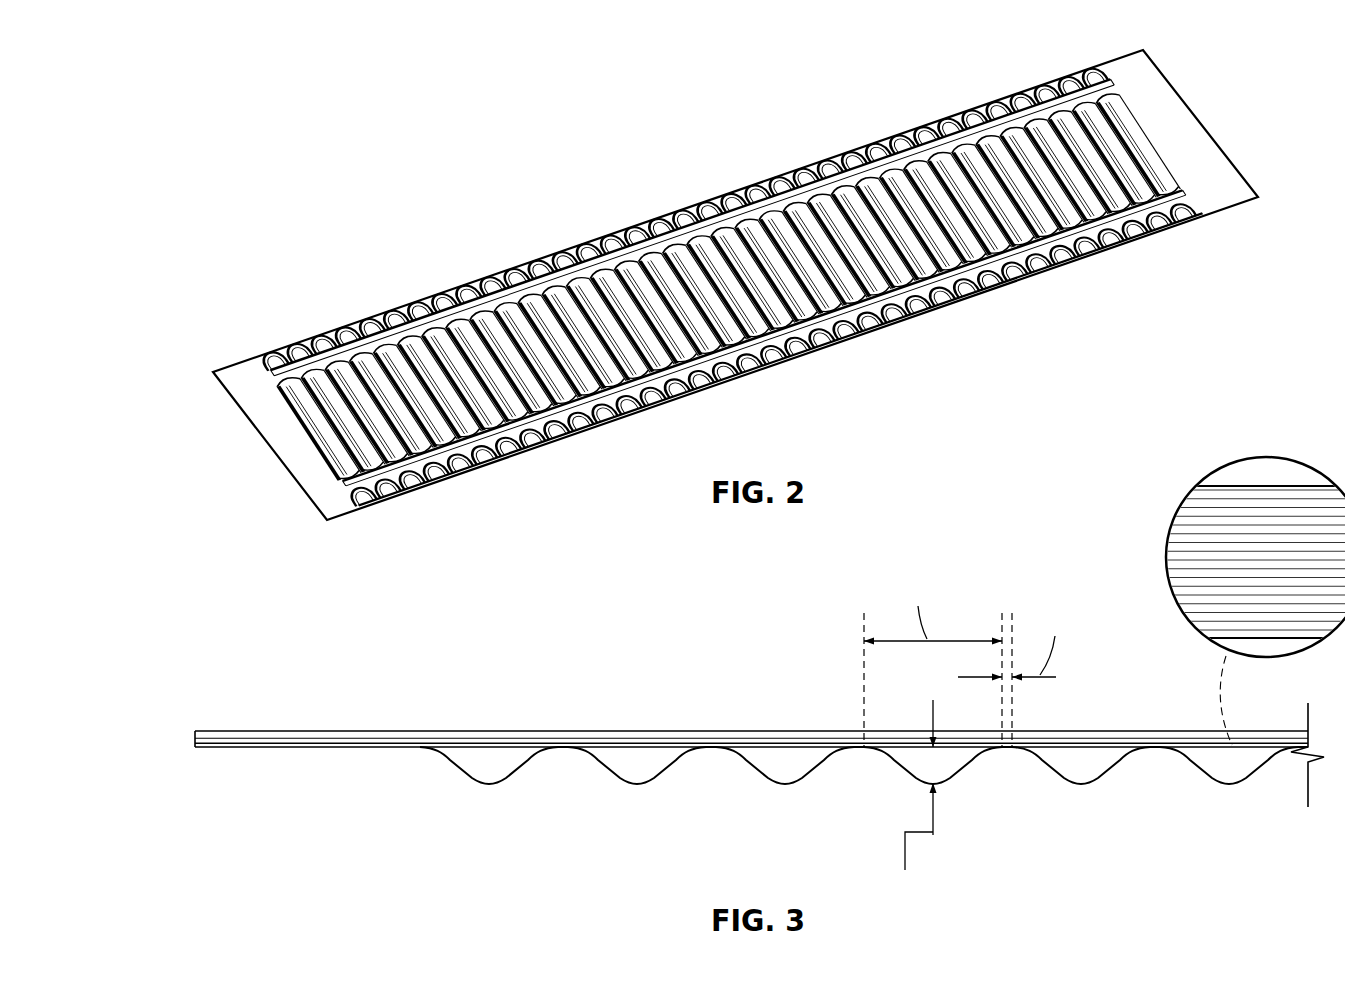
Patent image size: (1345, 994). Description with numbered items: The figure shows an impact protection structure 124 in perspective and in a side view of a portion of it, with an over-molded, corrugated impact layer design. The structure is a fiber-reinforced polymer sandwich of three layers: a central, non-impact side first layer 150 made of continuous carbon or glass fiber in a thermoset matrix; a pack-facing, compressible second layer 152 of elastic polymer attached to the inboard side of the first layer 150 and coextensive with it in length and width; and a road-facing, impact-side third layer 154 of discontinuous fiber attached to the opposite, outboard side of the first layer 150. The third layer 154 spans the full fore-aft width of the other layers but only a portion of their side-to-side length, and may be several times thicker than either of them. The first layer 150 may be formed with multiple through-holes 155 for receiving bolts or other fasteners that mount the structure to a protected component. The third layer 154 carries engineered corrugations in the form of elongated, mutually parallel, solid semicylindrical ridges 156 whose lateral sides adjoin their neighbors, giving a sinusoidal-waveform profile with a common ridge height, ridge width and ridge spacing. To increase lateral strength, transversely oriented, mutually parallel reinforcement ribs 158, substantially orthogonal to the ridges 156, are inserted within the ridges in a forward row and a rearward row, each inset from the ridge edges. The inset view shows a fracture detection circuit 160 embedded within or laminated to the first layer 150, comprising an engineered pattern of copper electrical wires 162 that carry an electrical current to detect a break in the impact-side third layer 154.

In FIG. 2, the impact protection structure 124 is at (222, 136).
In FIG. 3, the impact protection structure 124 is at (222, 666).
In FIG. 2, the first layer 150 is at (234, 372).
In FIG. 3, the first layer 150 is at (195, 743).
In FIG. 3, the second layer 152 is at (195, 733).
In FIG. 2, the third layer 154 is at (336, 362).
In FIG. 3, the third layer 154 is at (448, 761).
In FIG. 2, the through-holes 155 is at (1087, 90).
In FIG. 3, the ridges 156 is at (495, 784).
In FIG. 2, the reinforcement ribs 158 is at (952, 128).
In FIG. 3, the fracture detection circuit 160 is at (1172, 496).
In FIG. 3, the copper electrical wires 162 is at (1182, 525).